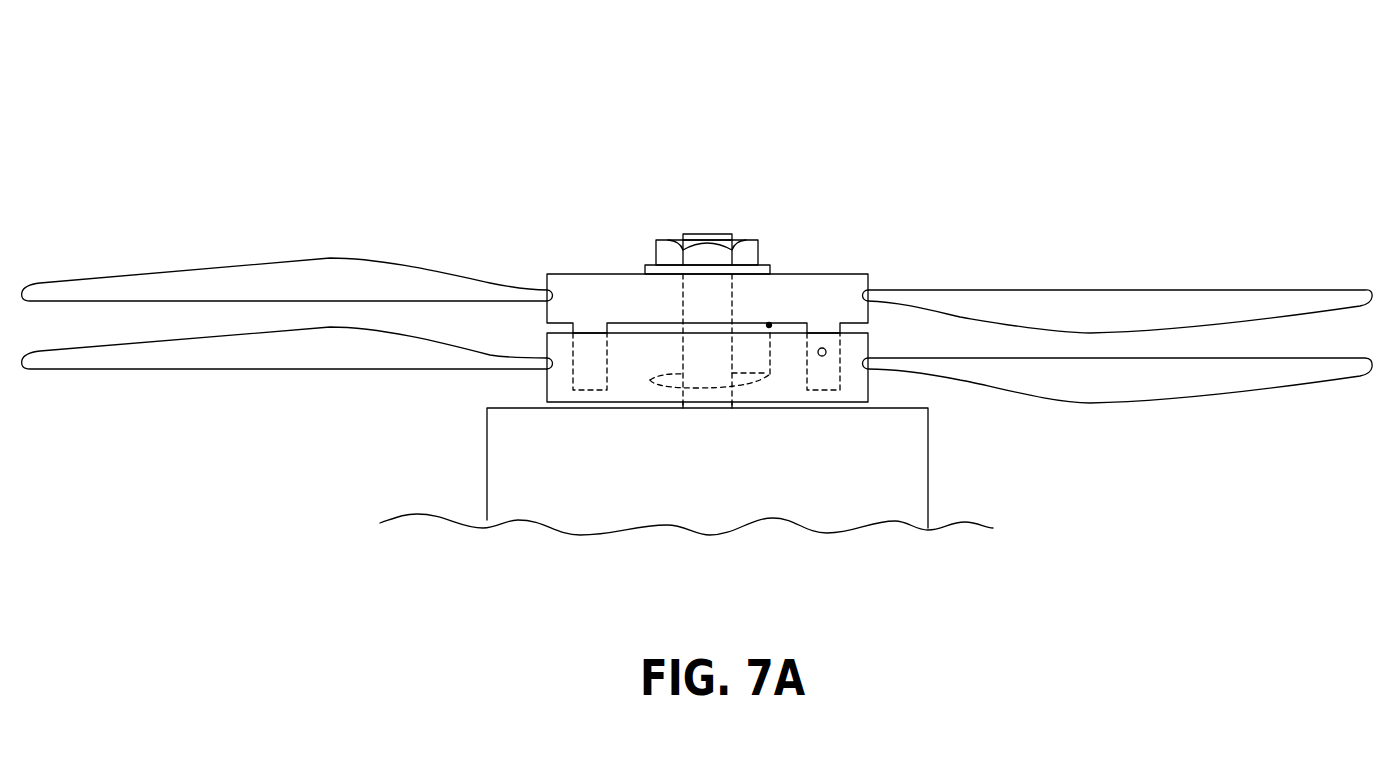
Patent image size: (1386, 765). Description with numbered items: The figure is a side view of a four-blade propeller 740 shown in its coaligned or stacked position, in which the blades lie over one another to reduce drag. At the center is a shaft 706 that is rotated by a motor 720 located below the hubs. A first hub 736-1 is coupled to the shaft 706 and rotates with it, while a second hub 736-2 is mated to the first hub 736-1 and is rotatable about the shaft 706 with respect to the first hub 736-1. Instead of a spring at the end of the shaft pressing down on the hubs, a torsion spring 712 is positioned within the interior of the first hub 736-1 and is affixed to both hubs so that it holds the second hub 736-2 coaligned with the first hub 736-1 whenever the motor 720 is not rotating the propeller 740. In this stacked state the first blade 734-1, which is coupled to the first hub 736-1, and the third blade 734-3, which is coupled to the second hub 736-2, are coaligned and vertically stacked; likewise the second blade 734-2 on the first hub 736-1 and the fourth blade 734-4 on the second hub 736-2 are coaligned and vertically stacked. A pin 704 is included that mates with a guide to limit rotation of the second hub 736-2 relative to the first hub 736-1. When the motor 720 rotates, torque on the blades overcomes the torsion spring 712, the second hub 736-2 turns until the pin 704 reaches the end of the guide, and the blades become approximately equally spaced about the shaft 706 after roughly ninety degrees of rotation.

The propeller 740 is at (850, 88).
The first blade 734-1 is at (1092, 385).
The second blade 734-2 is at (305, 358).
The third blade 734-3 is at (1080, 308).
The fourth blade 734-4 is at (305, 277).
The first hub 736-1 is at (557, 390).
The second hub 736-2 is at (577, 292).
The shaft 706 is at (696, 296).
The torsion spring 712 is at (658, 383).
The pin 704 is at (825, 356).
The motor 720 is at (907, 472).